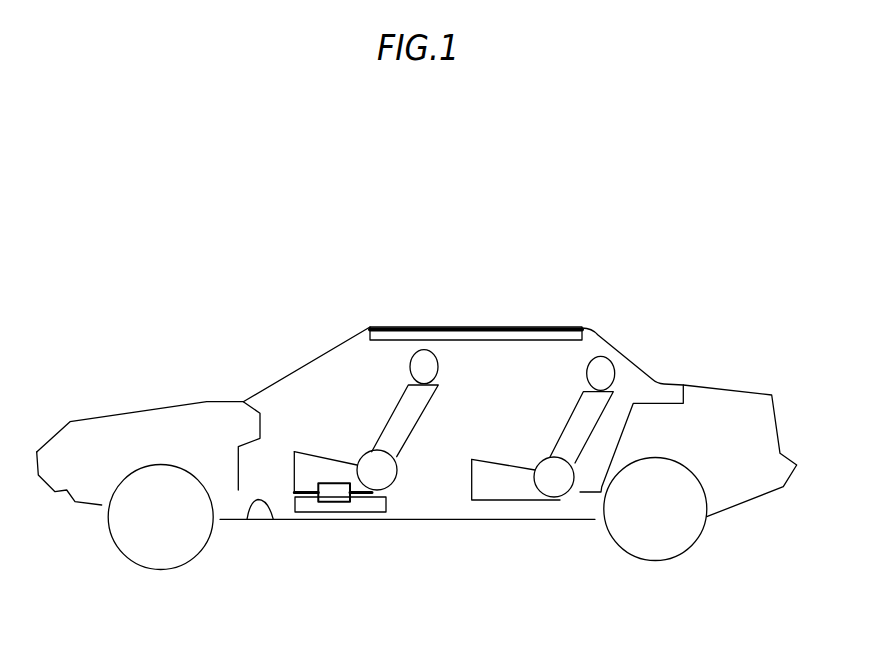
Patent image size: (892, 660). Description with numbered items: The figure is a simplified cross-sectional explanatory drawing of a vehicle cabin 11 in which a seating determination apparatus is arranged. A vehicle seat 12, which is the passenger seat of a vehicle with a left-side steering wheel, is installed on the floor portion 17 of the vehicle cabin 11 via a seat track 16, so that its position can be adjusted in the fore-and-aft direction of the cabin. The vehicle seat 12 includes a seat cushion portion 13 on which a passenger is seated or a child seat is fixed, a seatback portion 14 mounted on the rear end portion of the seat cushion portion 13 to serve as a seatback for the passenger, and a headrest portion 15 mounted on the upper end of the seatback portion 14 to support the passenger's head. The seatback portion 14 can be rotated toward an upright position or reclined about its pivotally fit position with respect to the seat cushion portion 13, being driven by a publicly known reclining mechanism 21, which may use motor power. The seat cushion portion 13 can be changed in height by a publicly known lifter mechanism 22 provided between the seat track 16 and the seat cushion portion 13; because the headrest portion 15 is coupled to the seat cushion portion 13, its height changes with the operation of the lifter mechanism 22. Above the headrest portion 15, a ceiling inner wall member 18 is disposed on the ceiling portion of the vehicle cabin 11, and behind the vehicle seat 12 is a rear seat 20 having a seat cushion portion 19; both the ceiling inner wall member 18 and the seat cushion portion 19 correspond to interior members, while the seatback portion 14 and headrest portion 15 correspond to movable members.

The vehicle cabin 11 is at (322, 390).
The vehicle seat 12 is at (337, 425).
The seat cushion portion 13 is at (320, 465).
The seatback portion 14 is at (415, 413).
The headrest portion 15 is at (422, 365).
The seat track 16 is at (371, 504).
The floor portion 17 is at (247, 519).
The ceiling inner wall member 18 is at (477, 334).
The seat cushion portion 19 is at (512, 483).
The rear seat 20 is at (543, 414).
The reclining mechanism 21 is at (387, 475).
The lifter mechanism 22 is at (332, 494).